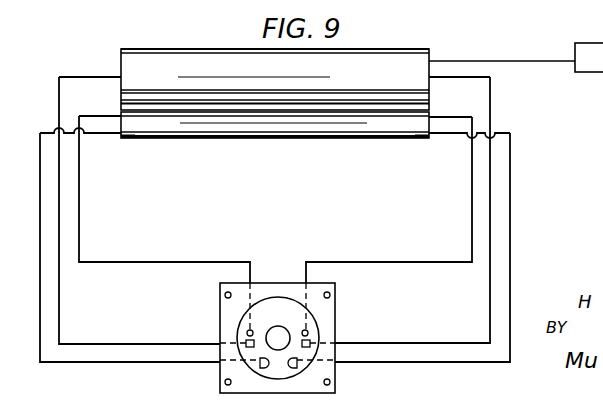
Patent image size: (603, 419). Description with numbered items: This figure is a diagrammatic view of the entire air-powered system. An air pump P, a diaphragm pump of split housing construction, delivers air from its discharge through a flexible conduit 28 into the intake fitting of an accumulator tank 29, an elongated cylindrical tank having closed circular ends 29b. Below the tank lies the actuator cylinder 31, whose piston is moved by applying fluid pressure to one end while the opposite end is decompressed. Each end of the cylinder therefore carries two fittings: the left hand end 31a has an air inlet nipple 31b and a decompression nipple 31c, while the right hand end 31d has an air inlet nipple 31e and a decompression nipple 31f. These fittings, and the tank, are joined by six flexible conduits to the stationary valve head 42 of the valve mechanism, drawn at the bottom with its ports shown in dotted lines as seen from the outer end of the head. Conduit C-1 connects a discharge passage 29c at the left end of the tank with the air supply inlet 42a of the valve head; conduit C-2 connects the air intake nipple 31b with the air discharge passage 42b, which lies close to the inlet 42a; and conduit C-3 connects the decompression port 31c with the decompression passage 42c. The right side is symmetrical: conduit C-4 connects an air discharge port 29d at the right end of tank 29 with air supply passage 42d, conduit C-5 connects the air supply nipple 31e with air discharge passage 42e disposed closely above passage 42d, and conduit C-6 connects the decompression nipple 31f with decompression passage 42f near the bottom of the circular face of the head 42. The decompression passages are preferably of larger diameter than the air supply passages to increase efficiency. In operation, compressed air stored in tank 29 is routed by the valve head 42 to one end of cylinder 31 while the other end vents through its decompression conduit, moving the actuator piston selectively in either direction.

The accumulator tank 29 is at (372, 81).
The closed circular ends 29b is at (121, 50).
The discharge passage 29c is at (120, 75).
The air discharge port 29d is at (433, 78).
The actuator cylinder 31 is at (290, 130).
The left hand end of actuator cylinder 31a is at (123, 139).
The air inlet nipple 31b is at (118, 114).
The decompression nipple 31c is at (110, 136).
The right hand end of actuator cylinder 31d is at (421, 141).
The air inlet nipple 31e is at (433, 117).
The decompression nipple 31f is at (432, 136).
The flexible conduit 28 is at (552, 62).
The air pump P is at (598, 68).
The flexible conduit C-1 is at (107, 344).
The second flexible conduit C-2 is at (142, 262).
The third flexible conduit C-3 is at (42, 367).
The fourth flexible conduit C-4 is at (490, 107).
The flexible conduit C-5 is at (470, 218).
The sixth conduit C-6 is at (510, 212).
The stationary valve head 42 is at (288, 268).
The air supply inlet 42a is at (225, 338).
The air discharge passage 42b is at (246, 330).
The decompression passage 42c is at (222, 371).
The air supply passage 42d is at (330, 340).
The air discharge passage 42e is at (309, 331).
The decompression passage 42f is at (325, 366).